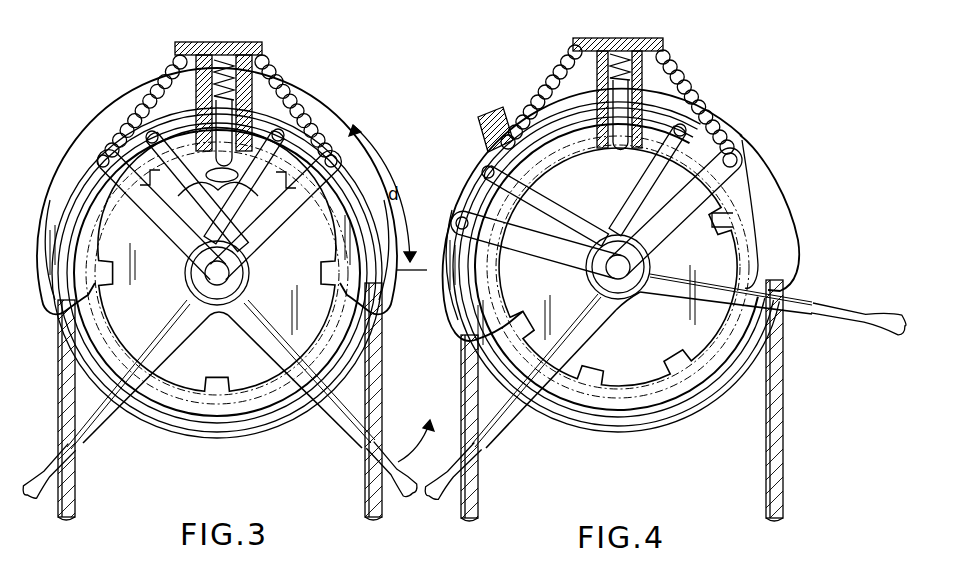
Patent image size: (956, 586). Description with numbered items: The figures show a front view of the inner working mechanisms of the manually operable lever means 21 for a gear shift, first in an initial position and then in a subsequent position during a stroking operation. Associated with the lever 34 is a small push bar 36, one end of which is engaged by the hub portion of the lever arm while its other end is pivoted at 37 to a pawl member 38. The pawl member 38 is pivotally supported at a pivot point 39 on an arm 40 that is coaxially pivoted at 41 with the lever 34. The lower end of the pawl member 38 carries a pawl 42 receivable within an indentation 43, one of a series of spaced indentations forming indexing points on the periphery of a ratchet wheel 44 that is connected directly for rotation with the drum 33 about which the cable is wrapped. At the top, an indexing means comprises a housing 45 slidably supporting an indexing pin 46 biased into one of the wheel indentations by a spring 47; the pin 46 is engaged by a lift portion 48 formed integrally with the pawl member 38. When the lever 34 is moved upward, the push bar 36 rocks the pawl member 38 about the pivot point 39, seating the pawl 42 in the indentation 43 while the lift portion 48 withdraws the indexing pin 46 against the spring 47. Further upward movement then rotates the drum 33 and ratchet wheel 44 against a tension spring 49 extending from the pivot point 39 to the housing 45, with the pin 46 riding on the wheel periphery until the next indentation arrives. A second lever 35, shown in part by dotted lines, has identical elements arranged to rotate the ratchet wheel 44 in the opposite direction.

In FIG. 3, the manually operable lever means 21 is at (94, 42).
In FIG. 4, the manually operable lever means 21 is at (468, 48).
In FIG. 3, the drum 33 is at (64, 341).
In FIG. 4, the drum 33 is at (466, 392).
In FIG. 3, the lever 34 is at (345, 420).
In FIG. 4, the lever 34 is at (808, 325).
In FIG. 3, the second lever 35 is at (92, 422).
In FIG. 4, the second lever 35 is at (520, 396).
In FIG. 3, the push bar 36 is at (198, 246).
In FIG. 4, the push bar 36 is at (578, 208).
In FIG. 3, the pivot 37 is at (320, 150).
In FIG. 4, the pivot 37 is at (482, 160).
In FIG. 3, the pawl member 38 is at (75, 187).
In FIG. 4, the pawl member 38 is at (470, 330).
In FIG. 3, the pivot point 39 is at (100, 160).
In FIG. 4, the pivot point 39 is at (460, 215).
In FIG. 3, the arm 40 is at (165, 240).
In FIG. 4, the arm 40 is at (492, 242).
In FIG. 3, the pivot 41 is at (217, 285).
In FIG. 4, the pivot 41 is at (628, 280).
In FIG. 3, the pawl 42 is at (62, 300).
In FIG. 4, the pawl 42 is at (512, 318).
In FIG. 3, the indentation 43 is at (118, 282).
In FIG. 4, the indentation 43 is at (530, 322).
In FIG. 3, the ratchet wheel 44 is at (190, 433).
In FIG. 4, the ratchet wheel 44 is at (605, 422).
In FIG. 3, the housing 45 is at (252, 62).
In FIG. 4, the housing 45 is at (650, 58).
In FIG. 3, the indexing pin 46 is at (228, 122).
In FIG. 4, the indexing pin 46 is at (612, 128).
In FIG. 3, the spring 47 is at (222, 58).
In FIG. 4, the spring 47 is at (622, 52).
In FIG. 3, the lift portion 48 is at (248, 246).
In FIG. 4, the lift portion 48 is at (568, 135).
In FIG. 3, the tension spring 49 is at (148, 90).
In FIG. 4, the tension spring 49 is at (535, 100).